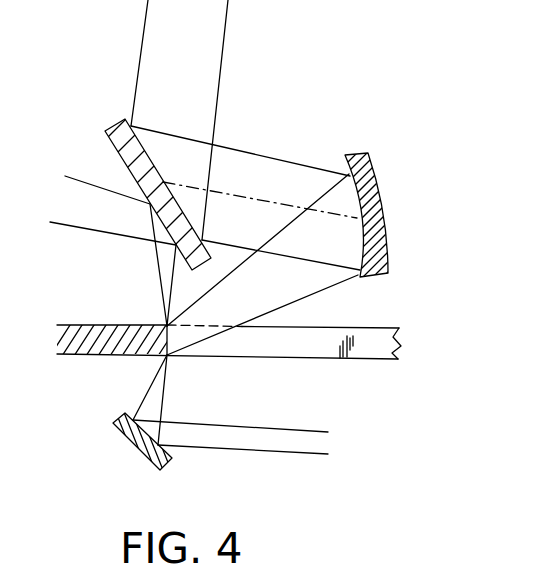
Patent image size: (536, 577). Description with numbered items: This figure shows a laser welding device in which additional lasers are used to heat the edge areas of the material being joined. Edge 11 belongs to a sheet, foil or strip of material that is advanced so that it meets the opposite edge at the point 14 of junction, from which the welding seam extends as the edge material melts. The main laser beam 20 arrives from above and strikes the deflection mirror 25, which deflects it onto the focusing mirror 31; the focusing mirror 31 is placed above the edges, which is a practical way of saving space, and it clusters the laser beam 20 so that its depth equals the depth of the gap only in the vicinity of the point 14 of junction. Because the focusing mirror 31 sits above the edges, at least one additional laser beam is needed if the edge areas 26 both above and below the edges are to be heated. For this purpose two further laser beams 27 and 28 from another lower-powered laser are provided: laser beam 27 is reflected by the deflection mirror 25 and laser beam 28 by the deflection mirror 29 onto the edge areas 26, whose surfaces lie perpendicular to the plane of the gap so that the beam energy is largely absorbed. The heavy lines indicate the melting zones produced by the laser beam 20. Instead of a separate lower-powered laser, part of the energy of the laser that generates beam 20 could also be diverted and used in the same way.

The edge 11 is at (383, 359).
The point of junction 14 is at (167, 357).
The laser beam 20 is at (192, 88).
The deflection mirror 25 is at (113, 123).
The edge areas 26 is at (160, 320).
The laser beam 27 is at (70, 217).
The laser beam 28 is at (312, 440).
The deflection mirror 29 is at (143, 440).
The focusing mirror 31 is at (387, 255).